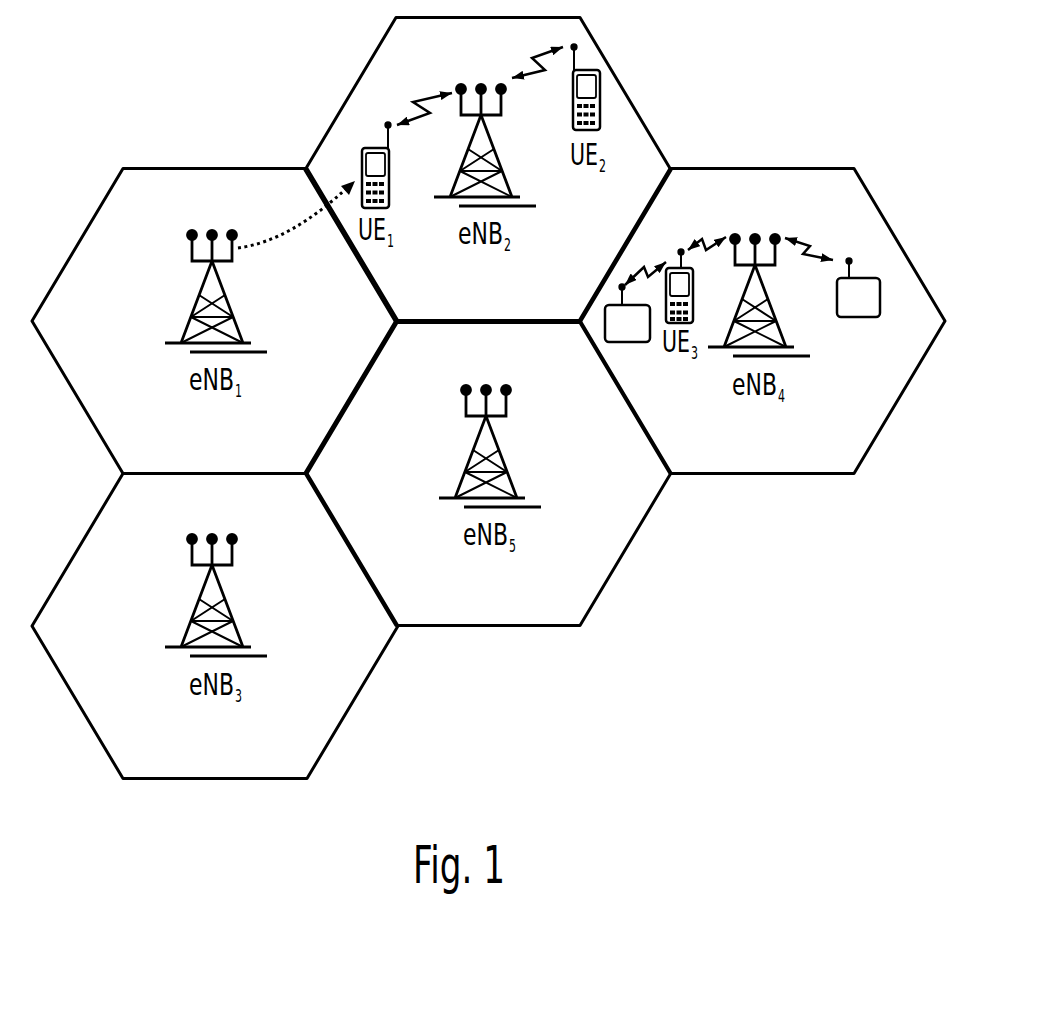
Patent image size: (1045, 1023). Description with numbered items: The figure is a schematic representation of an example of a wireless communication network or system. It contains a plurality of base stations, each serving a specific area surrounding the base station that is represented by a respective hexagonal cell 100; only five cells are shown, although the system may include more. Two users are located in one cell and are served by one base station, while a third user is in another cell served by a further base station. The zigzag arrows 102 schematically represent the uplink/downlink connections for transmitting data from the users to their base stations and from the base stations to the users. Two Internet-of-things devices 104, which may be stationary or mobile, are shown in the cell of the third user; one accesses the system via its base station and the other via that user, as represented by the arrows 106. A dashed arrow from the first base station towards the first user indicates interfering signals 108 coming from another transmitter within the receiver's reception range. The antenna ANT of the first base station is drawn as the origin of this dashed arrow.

The cell 100 is at (488, 398).
The uplink/downlink connection 102 is at (733, 209).
The IoT device 104 is at (628, 343).
The arrow representing IoT access connection 106 is at (838, 209).
The interfering signals 108 is at (292, 232).
The antenna ANT is at (263, 221).